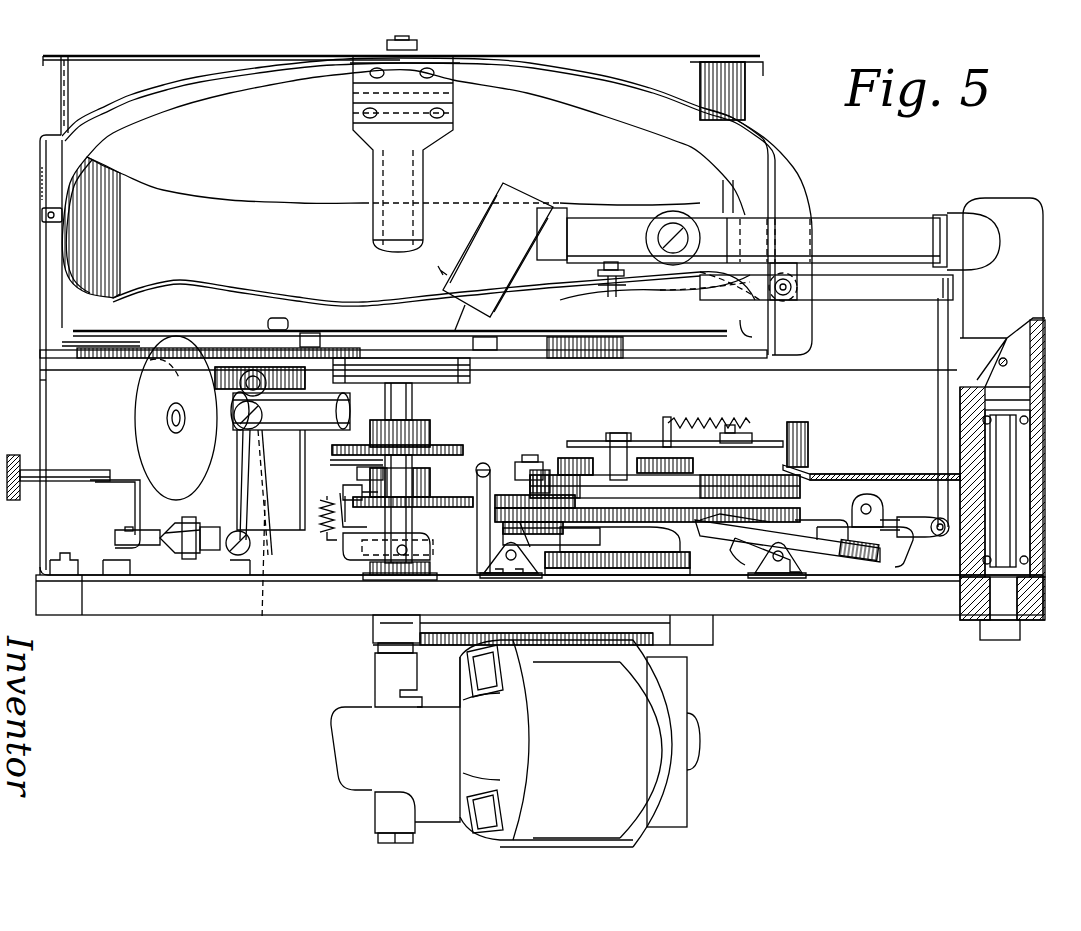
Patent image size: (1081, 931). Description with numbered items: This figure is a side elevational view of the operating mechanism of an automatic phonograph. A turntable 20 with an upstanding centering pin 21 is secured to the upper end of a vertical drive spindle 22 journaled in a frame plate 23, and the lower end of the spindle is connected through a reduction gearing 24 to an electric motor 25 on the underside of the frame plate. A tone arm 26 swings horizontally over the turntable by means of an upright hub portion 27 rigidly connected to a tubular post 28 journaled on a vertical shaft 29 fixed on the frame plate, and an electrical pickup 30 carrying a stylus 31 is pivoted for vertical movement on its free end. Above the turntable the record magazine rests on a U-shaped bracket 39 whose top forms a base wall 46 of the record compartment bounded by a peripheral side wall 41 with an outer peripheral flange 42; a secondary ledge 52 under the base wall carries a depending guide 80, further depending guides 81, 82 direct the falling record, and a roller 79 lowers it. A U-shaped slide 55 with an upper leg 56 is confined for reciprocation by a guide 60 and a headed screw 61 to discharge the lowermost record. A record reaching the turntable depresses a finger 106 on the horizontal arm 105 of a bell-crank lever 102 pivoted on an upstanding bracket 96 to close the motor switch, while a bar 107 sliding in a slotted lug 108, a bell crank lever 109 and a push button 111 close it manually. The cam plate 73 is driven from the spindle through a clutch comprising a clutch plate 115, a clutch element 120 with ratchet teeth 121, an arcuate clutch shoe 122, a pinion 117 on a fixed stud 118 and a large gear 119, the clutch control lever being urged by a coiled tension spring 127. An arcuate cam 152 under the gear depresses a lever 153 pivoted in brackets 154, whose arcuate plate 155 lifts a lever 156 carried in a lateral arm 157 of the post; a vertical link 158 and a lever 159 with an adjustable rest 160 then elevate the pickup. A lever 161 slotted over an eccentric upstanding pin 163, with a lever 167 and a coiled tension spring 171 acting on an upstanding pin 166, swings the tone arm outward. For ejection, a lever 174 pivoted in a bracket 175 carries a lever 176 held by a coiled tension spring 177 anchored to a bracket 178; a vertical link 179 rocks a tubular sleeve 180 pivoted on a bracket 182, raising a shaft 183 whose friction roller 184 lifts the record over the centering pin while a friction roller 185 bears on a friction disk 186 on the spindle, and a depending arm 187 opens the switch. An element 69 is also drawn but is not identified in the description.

The turntable 20 is at (626, 348).
The centering pin 21 is at (398, 328).
The drive spindle 22 is at (414, 402).
The frame plate 23 is at (866, 608).
The reduction gearing 24 is at (370, 706).
The electric motor 25 is at (660, 705).
The tone arm 26 is at (882, 228).
The hub portion 27 is at (1034, 284).
The tubular post 28 is at (1036, 452).
The vertical shaft 29 is at (1002, 489).
The electrical pickup 30 is at (486, 228).
The stylus 31 is at (460, 322).
The bracket 39 is at (40, 389).
The peripheral side wall 41 is at (61, 88).
The outer peripheral flange 42 is at (56, 60).
The base wall 46 is at (50, 135).
The secondary ledge 52 is at (362, 96).
The slide 55 is at (806, 188).
The upper leg 56 is at (535, 60).
The guide 60 is at (384, 50).
The headed screw 61 is at (58, 254).
The gear 69 is at (571, 460).
The cam plate 73 is at (782, 488).
The roller 79 is at (442, 392).
The depending guide 80 is at (420, 172).
The depending guides 81 is at (743, 333).
The depending guides 82 is at (284, 323).
The upstanding bracket 96 is at (255, 570).
The bell-crank lever 102 is at (266, 386).
The horizontal arm 105 is at (226, 376).
The finger 106 is at (134, 344).
The bar 107 is at (172, 545).
The slotted lug 108 is at (196, 528).
The bell crank lever 109 is at (120, 507).
The push button 111 is at (14, 460).
The clutch plate 115 is at (436, 507).
The pinion 117 is at (520, 530).
The fixed stud 118 is at (536, 458).
The large gear 119 is at (181, 281).
The clutch element 120 is at (404, 490).
The ratchet teeth 121 is at (428, 494).
The clutch shoe 122 is at (344, 486).
The coiled tension spring 127 is at (489, 462).
The arcuate cam 152 is at (592, 532).
The lever 153 is at (832, 560).
The brackets 154 is at (777, 568).
The arcuate plate 155 is at (880, 568).
The lever 156 is at (917, 538).
The lateral arm 157 is at (878, 468).
The vertical link 158 is at (938, 382).
The lever 159 is at (892, 297).
The adjustable rest 160 is at (603, 264).
The lever 161 is at (652, 440).
The upstanding pin 163 is at (618, 433).
The upstanding pin 166 is at (803, 430).
The lever 167 is at (730, 437).
The coiled tension spring 171 is at (724, 430).
The lever 174 is at (565, 562).
The bracket 175 is at (515, 573).
The lever 176 is at (293, 555).
The coiled tension spring 177 is at (318, 517).
The bracket 178 is at (350, 510).
The vertical link 179 is at (246, 490).
The tubular sleeve 180 is at (306, 432).
The bracket 182 is at (294, 460).
The shaft 183 is at (168, 418).
The friction roller 184 is at (146, 440).
The friction roller 185 is at (316, 413).
The friction disk 186 is at (448, 450).
The depending arm 187 is at (263, 573).